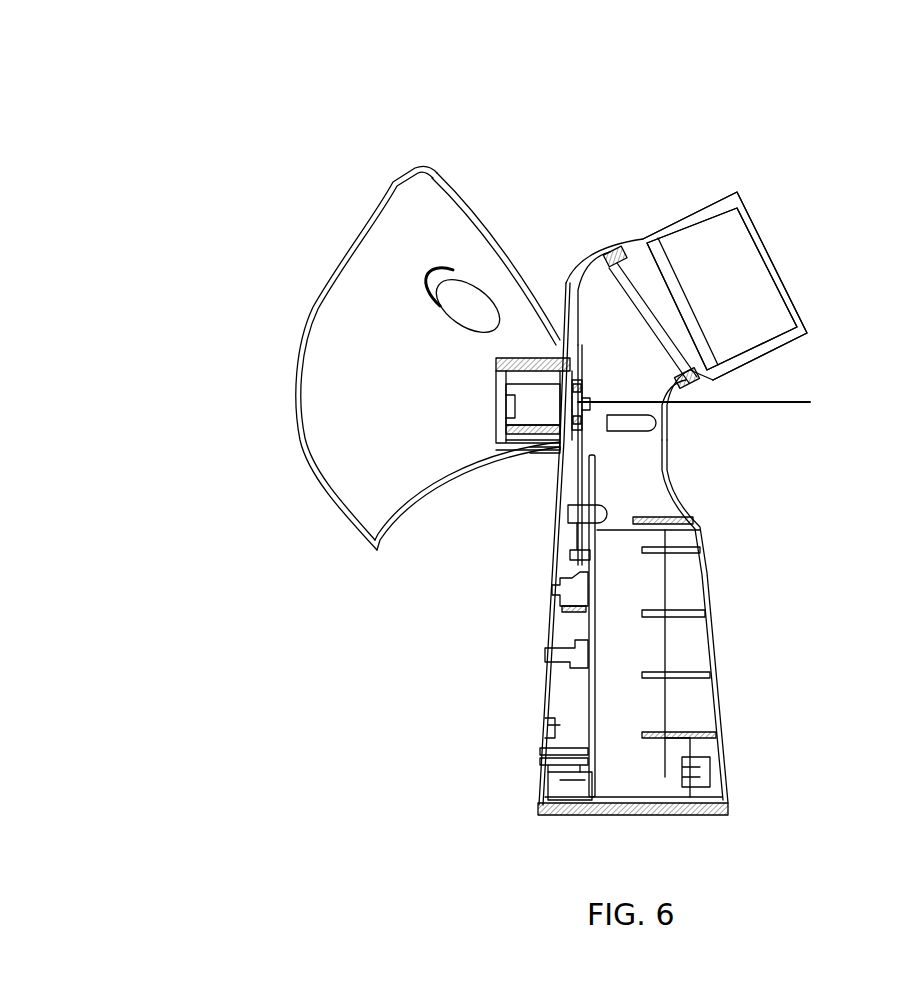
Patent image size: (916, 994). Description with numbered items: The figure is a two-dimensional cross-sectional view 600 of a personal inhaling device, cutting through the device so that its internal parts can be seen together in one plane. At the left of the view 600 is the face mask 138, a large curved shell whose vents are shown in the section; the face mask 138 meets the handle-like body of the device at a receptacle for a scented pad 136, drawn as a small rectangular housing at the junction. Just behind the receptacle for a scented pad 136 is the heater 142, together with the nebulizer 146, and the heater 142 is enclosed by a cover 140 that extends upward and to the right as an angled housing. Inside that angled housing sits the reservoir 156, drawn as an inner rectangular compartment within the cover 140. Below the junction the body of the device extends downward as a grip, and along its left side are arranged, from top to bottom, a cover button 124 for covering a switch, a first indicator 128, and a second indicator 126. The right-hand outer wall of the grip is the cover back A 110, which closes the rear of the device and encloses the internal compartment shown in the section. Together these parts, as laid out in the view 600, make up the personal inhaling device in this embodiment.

The two-dimensional cross-sectional view 600 is at (110, 70).
The cover back A 110 is at (697, 714).
The cover button 124 is at (556, 596).
The second indicator 126 is at (582, 752).
The first indicator 128 is at (545, 657).
The receptacle for a scented pad 136 is at (515, 371).
The face mask 138 is at (407, 320).
The cover 140 is at (580, 388).
The heater 142 is at (523, 407).
The nebulizer 146 is at (710, 404).
The reservoir 156 is at (725, 242).